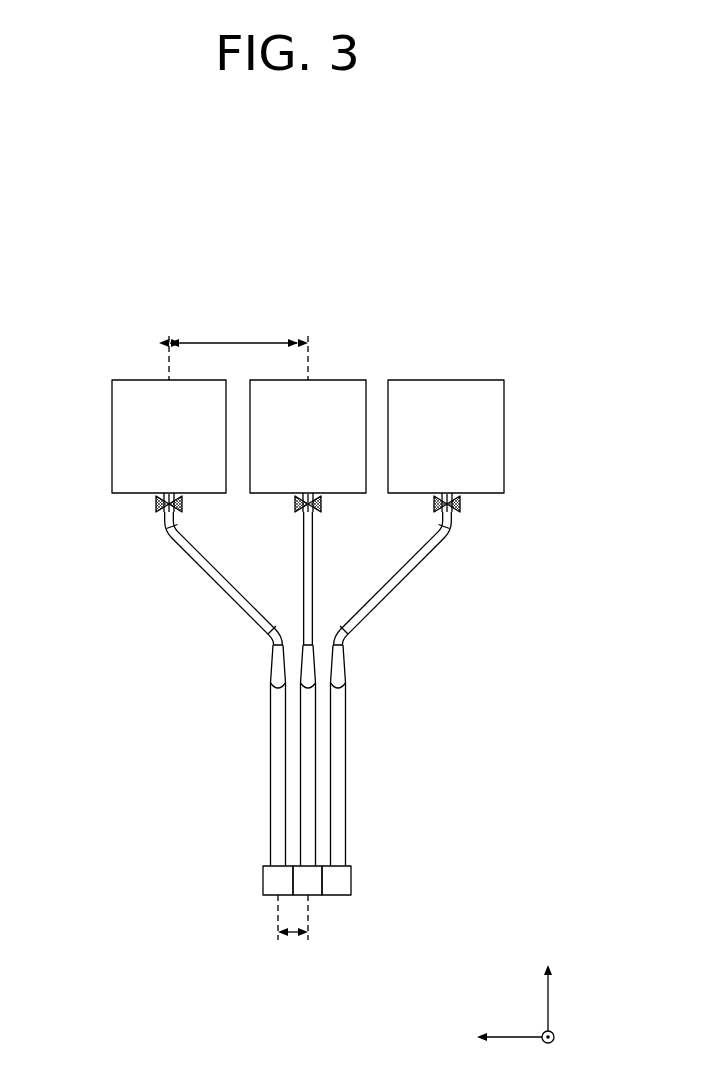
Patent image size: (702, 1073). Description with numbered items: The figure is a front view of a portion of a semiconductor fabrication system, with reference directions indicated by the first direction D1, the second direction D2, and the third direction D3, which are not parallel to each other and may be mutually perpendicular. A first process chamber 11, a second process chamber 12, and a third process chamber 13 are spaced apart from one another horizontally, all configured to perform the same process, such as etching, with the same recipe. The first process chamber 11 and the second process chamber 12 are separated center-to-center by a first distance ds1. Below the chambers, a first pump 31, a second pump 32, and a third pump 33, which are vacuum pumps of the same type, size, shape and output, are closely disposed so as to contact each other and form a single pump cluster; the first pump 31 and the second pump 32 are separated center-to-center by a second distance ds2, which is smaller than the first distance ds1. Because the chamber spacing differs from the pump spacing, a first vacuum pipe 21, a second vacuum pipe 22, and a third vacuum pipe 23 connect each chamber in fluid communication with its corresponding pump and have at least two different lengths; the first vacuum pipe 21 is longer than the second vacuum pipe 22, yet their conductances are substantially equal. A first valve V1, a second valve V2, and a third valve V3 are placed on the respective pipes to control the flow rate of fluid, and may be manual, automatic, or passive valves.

The first process chamber 11 is at (122, 436).
The second process chamber 12 is at (337, 392).
The third process chamber 13 is at (493, 437).
The first valve V1 is at (155, 504).
The second valve V2 is at (321, 504).
The third valve V3 is at (461, 504).
The first vacuum pipe 21 is at (224, 578).
The second vacuum pipe 22 is at (311, 543).
The third vacuum pipe 23 is at (390, 578).
The first pump 31 is at (277, 883).
The second pump 32 is at (310, 874).
The third pump 33 is at (340, 883).
The first distance ds1 is at (233, 346).
The second distance ds2 is at (293, 931).
The first direction D1 is at (547, 984).
The second direction D2 is at (493, 1039).
The third direction D3 is at (548, 1052).